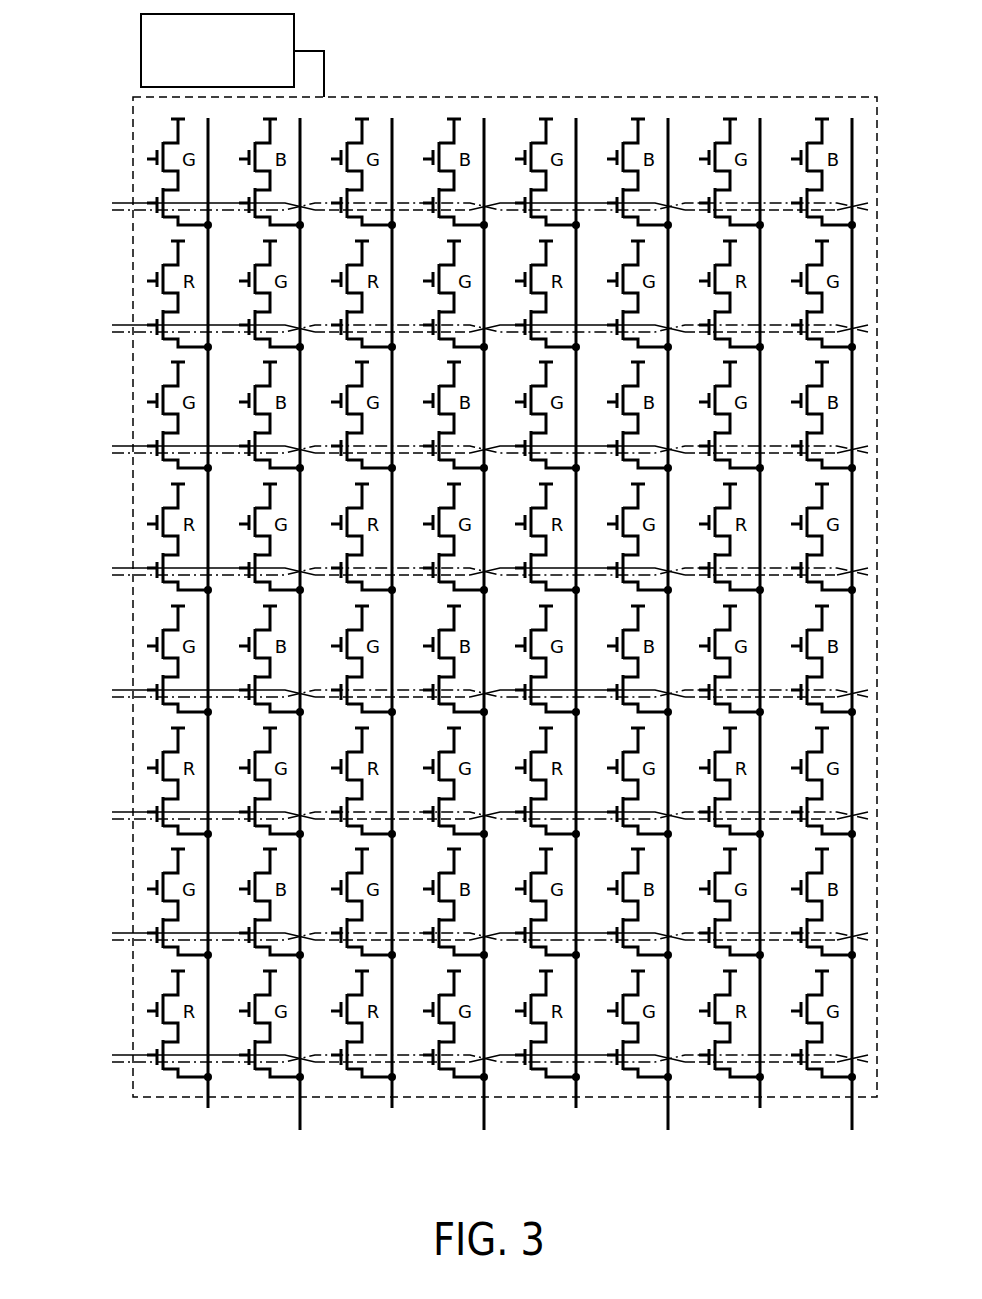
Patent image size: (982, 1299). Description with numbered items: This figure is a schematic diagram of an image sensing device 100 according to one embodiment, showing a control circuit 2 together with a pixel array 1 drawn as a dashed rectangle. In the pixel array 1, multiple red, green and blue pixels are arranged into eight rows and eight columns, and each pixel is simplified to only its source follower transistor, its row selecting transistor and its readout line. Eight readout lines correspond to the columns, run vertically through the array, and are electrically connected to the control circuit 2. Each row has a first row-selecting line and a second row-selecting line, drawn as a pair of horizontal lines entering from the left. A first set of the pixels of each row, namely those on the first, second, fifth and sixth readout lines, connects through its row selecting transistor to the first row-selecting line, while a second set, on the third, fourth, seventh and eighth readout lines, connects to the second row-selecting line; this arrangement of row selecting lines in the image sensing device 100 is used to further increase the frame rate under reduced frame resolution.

The image sensing device 100 is at (95, 97).
The control circuit 2 is at (295, 24).
The pixel array 1 is at (525, 97).